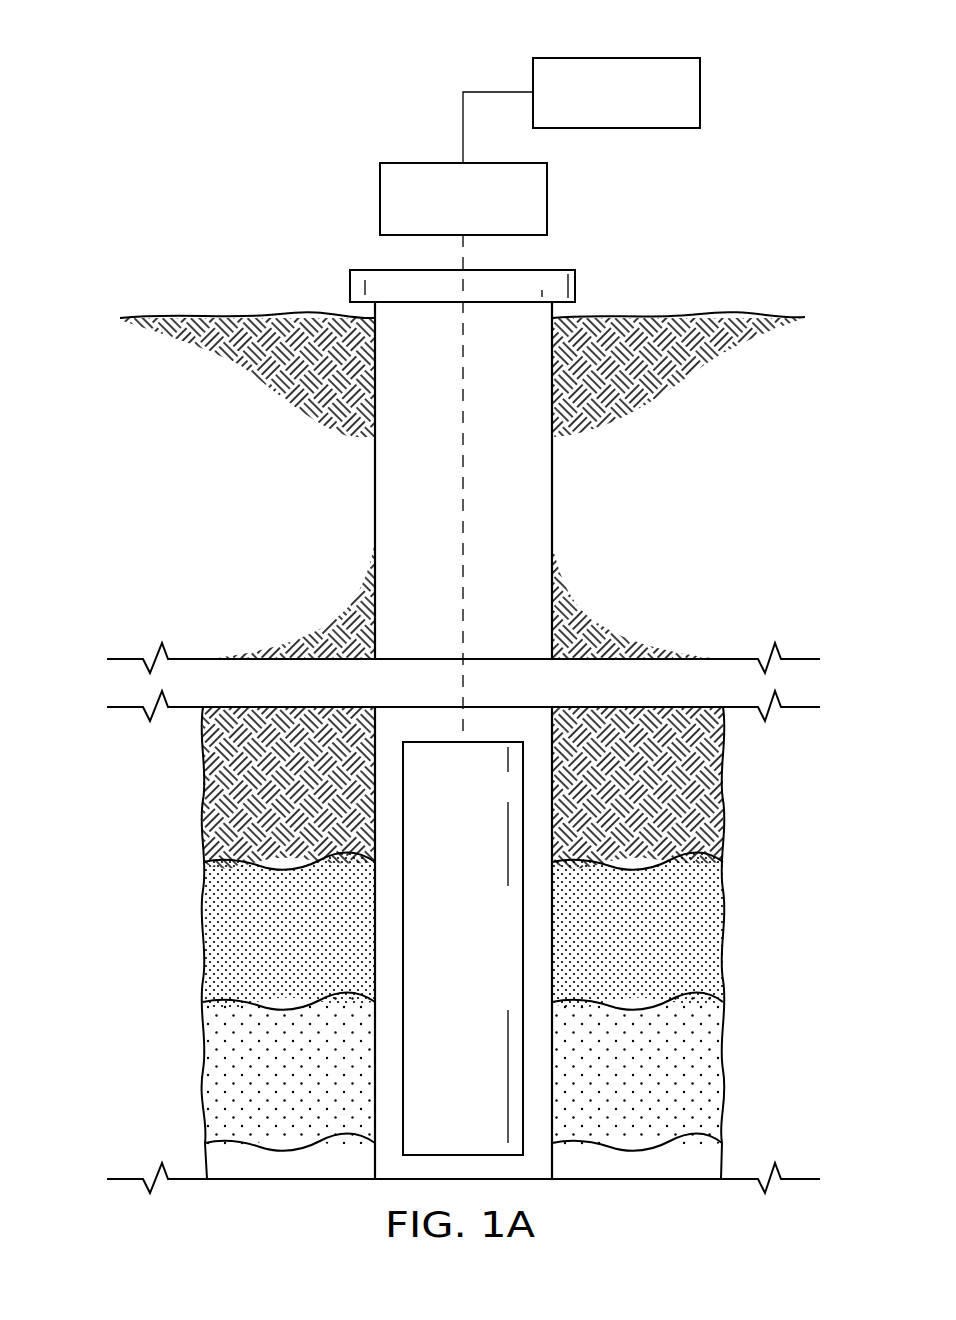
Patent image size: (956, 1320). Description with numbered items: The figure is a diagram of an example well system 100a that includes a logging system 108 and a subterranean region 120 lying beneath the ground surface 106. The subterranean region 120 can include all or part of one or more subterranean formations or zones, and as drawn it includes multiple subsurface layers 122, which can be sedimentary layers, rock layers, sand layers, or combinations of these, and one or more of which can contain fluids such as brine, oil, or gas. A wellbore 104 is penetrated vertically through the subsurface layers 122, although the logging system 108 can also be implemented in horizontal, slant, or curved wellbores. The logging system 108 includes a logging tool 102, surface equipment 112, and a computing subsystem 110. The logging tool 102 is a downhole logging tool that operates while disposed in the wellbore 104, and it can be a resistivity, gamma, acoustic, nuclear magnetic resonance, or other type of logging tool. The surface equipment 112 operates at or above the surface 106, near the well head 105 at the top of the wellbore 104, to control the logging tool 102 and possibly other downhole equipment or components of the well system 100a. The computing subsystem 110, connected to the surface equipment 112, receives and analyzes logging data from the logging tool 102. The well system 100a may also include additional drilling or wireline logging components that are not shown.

The well system 100a is at (250, 115).
The logging tool 102 is at (485, 996).
The wellbore 104 is at (375, 511).
The well head 105 is at (350, 283).
The ground surface 106 is at (678, 318).
The logging system 108 is at (770, 185).
The computing subsystem 110 is at (620, 57).
The surface equipment 112 is at (428, 163).
The subterranean region 120 is at (167, 936).
The subsurface layers 122 is at (727, 783).